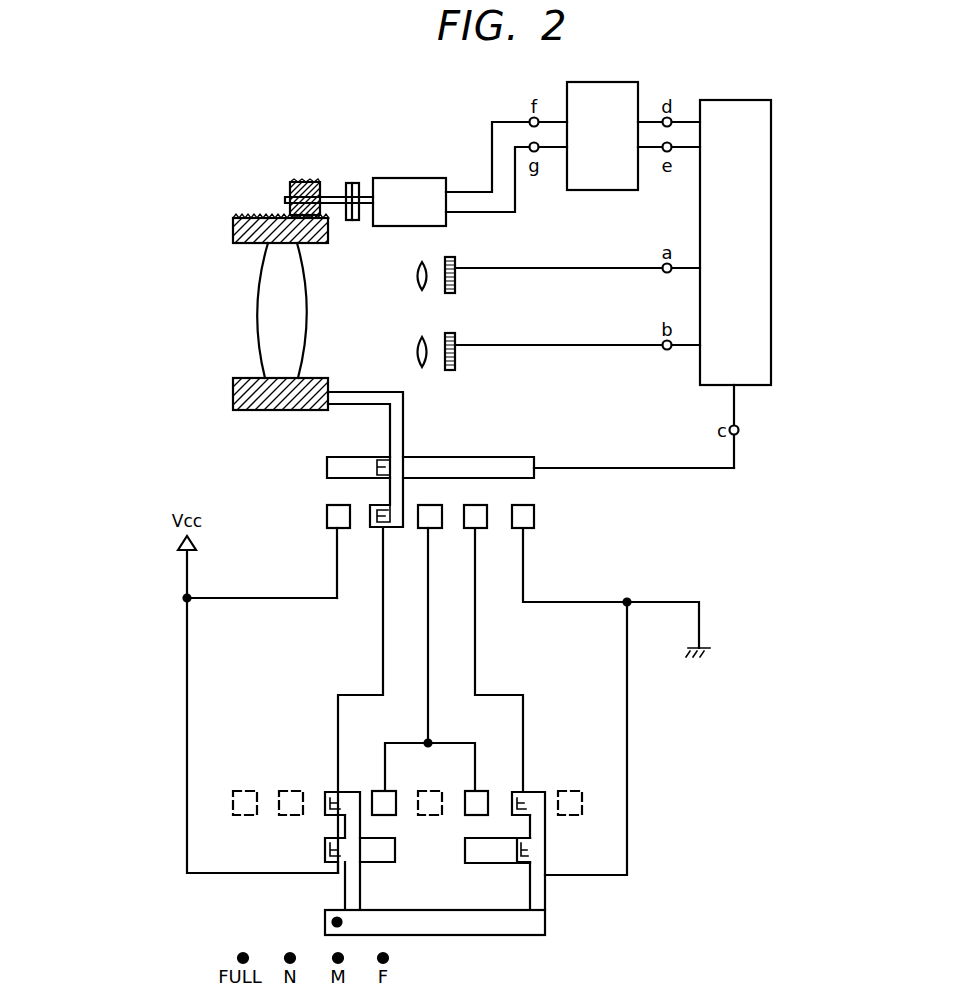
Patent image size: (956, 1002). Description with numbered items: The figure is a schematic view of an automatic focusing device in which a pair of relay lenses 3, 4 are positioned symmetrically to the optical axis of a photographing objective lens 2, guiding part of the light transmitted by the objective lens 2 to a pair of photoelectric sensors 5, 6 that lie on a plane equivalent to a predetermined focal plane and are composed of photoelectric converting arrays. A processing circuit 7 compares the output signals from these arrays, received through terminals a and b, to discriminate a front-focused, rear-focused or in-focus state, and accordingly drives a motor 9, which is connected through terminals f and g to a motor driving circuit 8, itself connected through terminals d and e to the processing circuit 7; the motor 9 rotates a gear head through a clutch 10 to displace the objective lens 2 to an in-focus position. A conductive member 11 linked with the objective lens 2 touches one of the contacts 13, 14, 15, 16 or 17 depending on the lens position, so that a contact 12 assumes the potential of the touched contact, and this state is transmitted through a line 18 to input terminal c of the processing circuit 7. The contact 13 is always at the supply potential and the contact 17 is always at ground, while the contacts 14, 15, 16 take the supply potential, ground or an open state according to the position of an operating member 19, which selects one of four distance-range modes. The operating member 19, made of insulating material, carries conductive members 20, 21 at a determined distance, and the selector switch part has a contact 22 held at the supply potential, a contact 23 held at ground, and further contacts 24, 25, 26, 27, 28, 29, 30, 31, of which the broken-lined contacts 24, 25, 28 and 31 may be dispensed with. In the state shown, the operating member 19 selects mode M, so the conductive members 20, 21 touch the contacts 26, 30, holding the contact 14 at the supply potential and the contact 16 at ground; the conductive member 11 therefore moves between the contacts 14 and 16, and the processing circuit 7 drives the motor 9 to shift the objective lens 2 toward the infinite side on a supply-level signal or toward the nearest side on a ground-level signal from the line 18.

The objective lens 2 is at (257, 297).
The relay lens 3 is at (416, 276).
The relay lens 4 is at (416, 352).
The photoelectric sensor 5 is at (455, 260).
The photoelectric sensor 6 is at (455, 338).
The processing circuit 7 is at (771, 120).
The motor driving circuit 8 is at (627, 82).
The motor 9 is at (412, 178).
The clutch 10 is at (352, 183).
The conductive member 11 is at (397, 433).
The contact 12 is at (474, 457).
The contact 13 is at (339, 534).
The contact 14 is at (385, 534).
The contact 15 is at (430, 534).
The contact 16 is at (477, 534).
The contact 17 is at (524, 534).
The line 18 is at (618, 468).
The operating member 19 is at (536, 925).
The conductive member 20 is at (358, 891).
The conductive member 21 is at (545, 892).
The contact 22 is at (397, 850).
The contact 23 is at (493, 864).
The contact 24 is at (248, 791).
The contact 25 is at (291, 791).
The contact 26 is at (346, 792).
The contact 27 is at (390, 791).
The contact 28 is at (434, 791).
The contact 29 is at (483, 791).
The contact 30 is at (527, 792).
The contact 31 is at (575, 791).